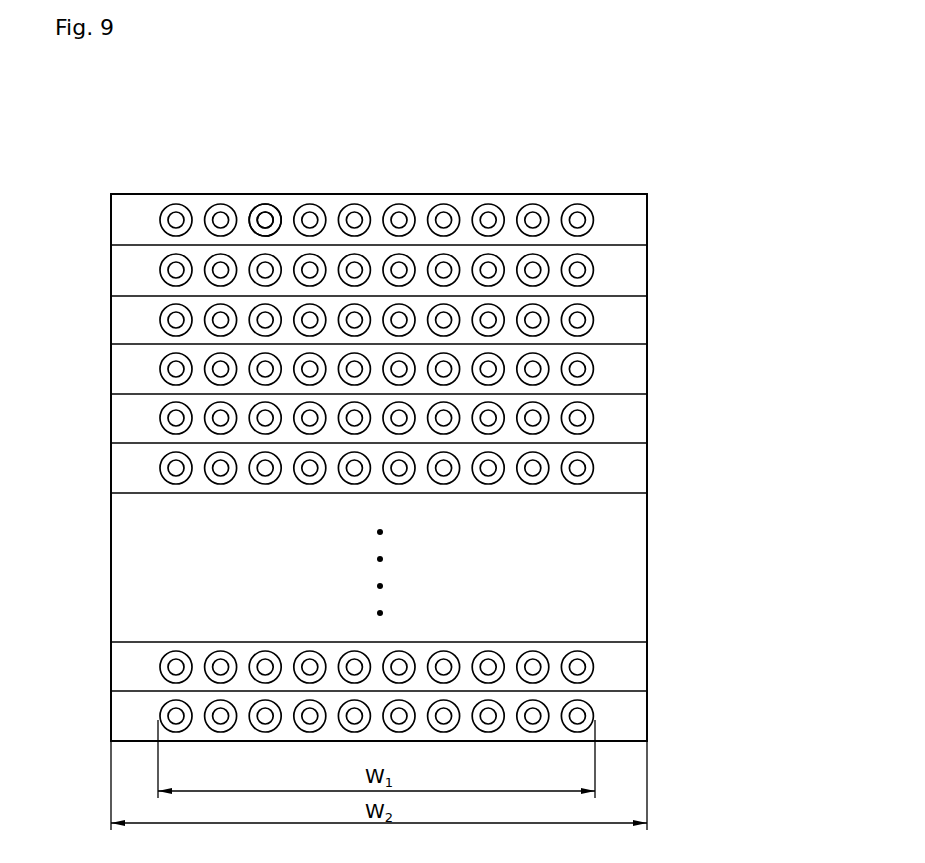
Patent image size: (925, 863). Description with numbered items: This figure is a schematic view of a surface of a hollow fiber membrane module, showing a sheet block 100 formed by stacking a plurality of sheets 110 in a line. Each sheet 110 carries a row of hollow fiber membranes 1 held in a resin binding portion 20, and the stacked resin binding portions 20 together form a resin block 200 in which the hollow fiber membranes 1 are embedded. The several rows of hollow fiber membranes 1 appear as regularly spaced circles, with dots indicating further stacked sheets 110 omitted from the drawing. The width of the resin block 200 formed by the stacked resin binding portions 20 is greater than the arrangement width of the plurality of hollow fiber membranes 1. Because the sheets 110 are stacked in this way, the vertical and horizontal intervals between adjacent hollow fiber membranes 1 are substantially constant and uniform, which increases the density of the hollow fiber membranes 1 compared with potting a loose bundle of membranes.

The hollow fiber membrane 1 is at (266, 207).
The resin binding portion 20 is at (727, 731).
The sheet block 100 is at (642, 154).
The sheet 110 is at (110, 219).
The resin block 200 is at (453, 469).